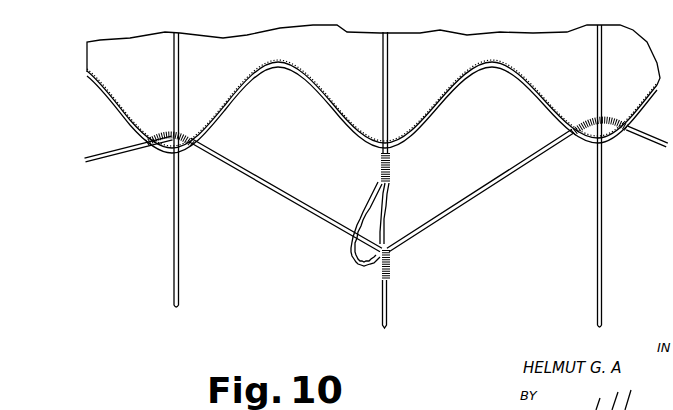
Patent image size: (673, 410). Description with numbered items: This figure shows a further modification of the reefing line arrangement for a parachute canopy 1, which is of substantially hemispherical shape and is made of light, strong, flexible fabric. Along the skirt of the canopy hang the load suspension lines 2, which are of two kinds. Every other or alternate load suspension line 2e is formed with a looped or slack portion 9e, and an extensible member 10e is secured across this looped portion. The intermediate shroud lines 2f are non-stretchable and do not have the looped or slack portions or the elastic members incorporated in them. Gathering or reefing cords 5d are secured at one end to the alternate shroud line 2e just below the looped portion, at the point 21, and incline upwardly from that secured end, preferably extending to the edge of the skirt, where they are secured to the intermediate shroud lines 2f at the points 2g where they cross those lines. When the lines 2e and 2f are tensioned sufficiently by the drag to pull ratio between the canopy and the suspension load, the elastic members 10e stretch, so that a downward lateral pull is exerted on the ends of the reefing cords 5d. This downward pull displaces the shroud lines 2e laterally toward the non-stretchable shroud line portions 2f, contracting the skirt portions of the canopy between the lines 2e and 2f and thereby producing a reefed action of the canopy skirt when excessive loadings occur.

The parachute canopy 1 is at (328, 77).
The load suspension line 2 is at (180, 61).
The alternate load suspension line 2e is at (388, 297).
The intermediate non-stretchable shroud line 2f is at (180, 218).
The securing point 2g is at (180, 133).
The reefing cord 5d is at (313, 212).
The looped slack portion 9e is at (353, 262).
The extensible member 10e is at (389, 207).
The reefing cord attachment point 21 is at (392, 263).